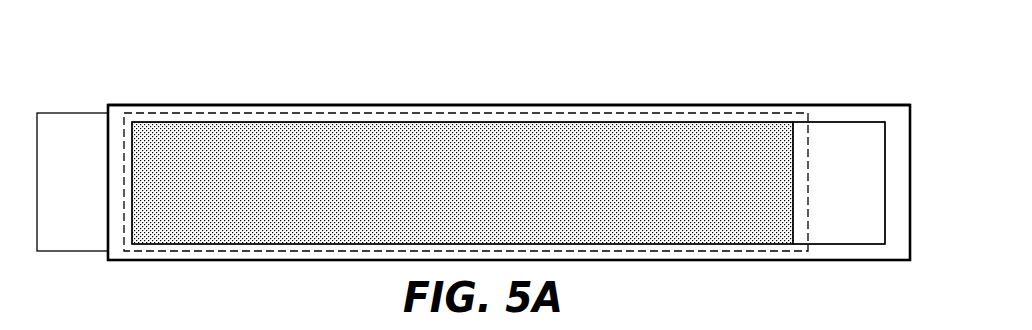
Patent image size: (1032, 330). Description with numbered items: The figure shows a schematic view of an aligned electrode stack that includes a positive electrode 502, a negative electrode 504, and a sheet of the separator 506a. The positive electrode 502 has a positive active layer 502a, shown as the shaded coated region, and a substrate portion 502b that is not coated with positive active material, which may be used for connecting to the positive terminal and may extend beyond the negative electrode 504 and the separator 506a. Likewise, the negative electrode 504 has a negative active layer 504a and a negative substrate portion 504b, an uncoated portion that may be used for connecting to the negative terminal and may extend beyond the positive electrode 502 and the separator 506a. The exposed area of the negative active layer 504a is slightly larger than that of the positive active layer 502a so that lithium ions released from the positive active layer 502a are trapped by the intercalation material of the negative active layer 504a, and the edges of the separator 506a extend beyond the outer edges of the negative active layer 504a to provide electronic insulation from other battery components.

The positive electrode 502 is at (792, 122).
The positive active layer 502a is at (665, 130).
The substrate portion 502b is at (845, 130).
The negative electrode 504 is at (127, 108).
The negative active layer 504a is at (525, 113).
The negative substrate portion 504b is at (75, 110).
The separator 506a is at (375, 105).